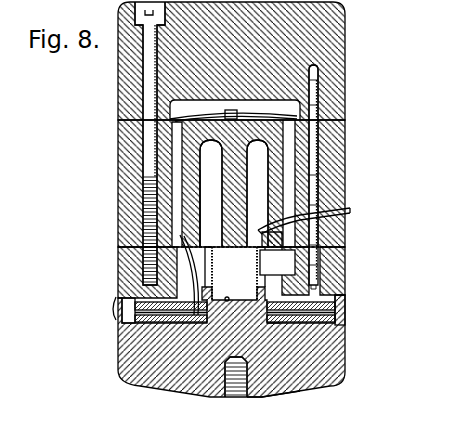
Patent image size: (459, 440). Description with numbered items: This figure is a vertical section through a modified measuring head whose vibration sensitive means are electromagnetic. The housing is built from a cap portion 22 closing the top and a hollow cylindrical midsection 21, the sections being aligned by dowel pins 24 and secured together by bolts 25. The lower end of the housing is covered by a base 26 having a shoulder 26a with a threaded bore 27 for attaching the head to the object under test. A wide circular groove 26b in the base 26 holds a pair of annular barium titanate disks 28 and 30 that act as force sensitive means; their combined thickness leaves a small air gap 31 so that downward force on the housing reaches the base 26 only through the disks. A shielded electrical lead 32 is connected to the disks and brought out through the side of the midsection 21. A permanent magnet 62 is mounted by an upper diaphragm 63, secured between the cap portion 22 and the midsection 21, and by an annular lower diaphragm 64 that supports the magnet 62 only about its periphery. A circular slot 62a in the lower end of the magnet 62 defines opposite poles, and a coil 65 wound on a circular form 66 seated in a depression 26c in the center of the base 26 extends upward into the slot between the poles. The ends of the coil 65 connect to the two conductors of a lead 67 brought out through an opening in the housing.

The cap portion 22 is at (345, 42).
The midsection 21 is at (345, 163).
The base 26 is at (345, 340).
The bolts 25 is at (147, 87).
The dowel pins 24 is at (318, 130).
The upper diaphragm 63 is at (280, 120).
The permanent magnet 62 is at (232, 157).
The circular slot 62a is at (207, 177).
The lead 67 is at (378, 211).
The lower diaphragm 64 is at (300, 233).
The shielded electrical lead 32 is at (177, 263).
The circular form 66 is at (215, 272).
The coil 65 is at (262, 256).
The annular disk 28 is at (128, 306).
The annular disk 30 is at (140, 318).
The air gap 31 is at (337, 293).
The depression 26c is at (226, 301).
The threaded bore 27 is at (242, 386).
The shoulder 26a is at (258, 397).
The circular groove 26b is at (277, 323).